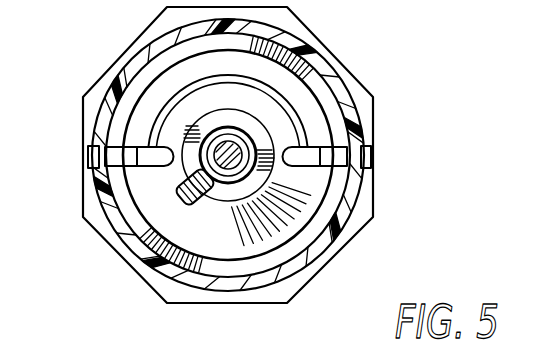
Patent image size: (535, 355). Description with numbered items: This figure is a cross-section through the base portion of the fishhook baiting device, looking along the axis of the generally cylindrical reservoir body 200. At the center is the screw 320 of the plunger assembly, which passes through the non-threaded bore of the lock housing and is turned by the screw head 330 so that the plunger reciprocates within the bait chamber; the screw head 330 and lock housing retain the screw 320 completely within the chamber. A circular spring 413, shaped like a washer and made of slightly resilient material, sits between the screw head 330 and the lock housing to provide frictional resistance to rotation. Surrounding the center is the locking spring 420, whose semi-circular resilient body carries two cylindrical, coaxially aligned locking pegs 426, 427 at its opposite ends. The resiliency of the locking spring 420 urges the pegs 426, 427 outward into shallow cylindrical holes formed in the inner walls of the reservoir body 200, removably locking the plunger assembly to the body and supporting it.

The reservoir body 200 is at (322, 50).
The screw 320 is at (243, 140).
The screw head 330 is at (371, 176).
The circular spring 413 is at (186, 207).
The locking spring 420 is at (170, 112).
The locking peg 426 is at (115, 153).
The locking peg 427 is at (340, 157).